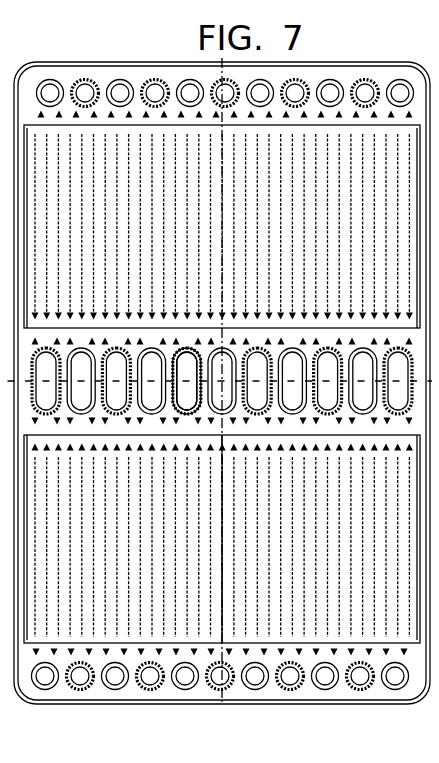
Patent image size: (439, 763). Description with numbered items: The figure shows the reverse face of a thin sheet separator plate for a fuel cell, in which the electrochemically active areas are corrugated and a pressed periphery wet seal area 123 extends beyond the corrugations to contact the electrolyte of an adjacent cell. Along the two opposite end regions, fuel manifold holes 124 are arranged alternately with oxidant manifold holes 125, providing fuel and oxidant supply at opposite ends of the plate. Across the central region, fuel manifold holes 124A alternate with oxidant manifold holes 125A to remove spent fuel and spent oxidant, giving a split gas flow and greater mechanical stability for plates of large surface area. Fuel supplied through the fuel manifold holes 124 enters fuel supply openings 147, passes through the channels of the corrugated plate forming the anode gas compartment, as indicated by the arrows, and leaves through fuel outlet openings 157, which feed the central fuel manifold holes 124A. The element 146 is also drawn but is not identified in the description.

The periphery wet seal area 123 is at (318, 702).
The fuel manifold holes 124 is at (287, 677).
The oxidant manifold holes 125 is at (116, 682).
The port rim 146 is at (171, 410).
The fuel supply openings 147 is at (295, 702).
The fuel manifold holes 124A is at (247, 405).
The oxidant manifold holes 125A is at (292, 407).
The fuel outlet openings 157 is at (255, 402).